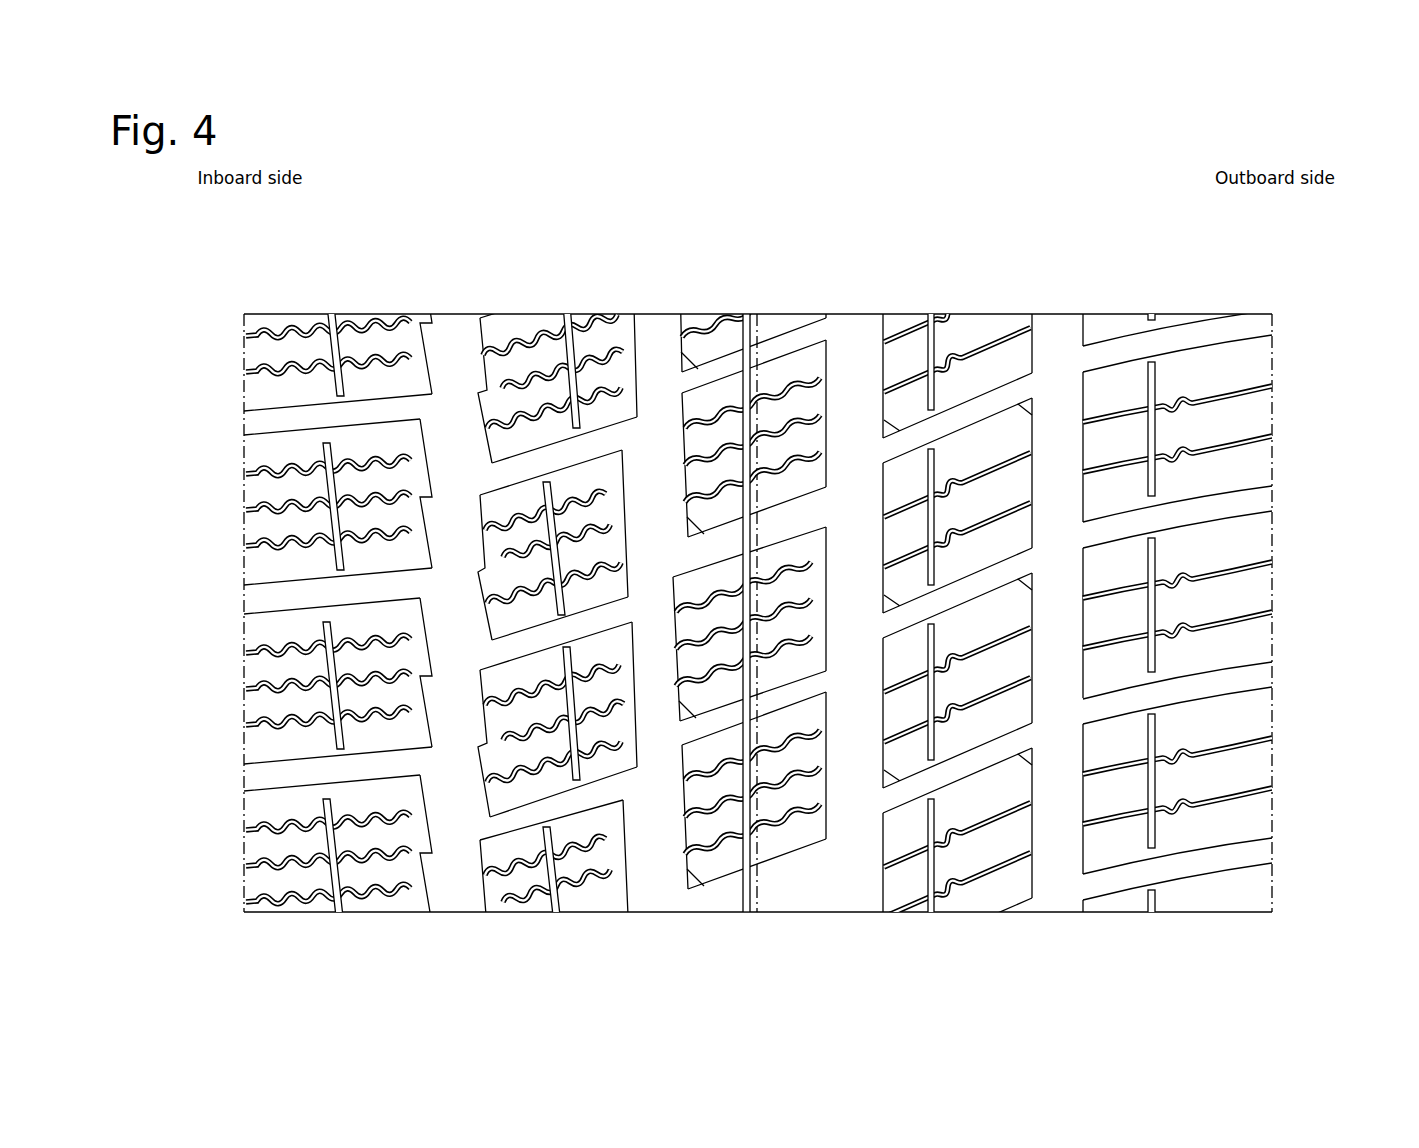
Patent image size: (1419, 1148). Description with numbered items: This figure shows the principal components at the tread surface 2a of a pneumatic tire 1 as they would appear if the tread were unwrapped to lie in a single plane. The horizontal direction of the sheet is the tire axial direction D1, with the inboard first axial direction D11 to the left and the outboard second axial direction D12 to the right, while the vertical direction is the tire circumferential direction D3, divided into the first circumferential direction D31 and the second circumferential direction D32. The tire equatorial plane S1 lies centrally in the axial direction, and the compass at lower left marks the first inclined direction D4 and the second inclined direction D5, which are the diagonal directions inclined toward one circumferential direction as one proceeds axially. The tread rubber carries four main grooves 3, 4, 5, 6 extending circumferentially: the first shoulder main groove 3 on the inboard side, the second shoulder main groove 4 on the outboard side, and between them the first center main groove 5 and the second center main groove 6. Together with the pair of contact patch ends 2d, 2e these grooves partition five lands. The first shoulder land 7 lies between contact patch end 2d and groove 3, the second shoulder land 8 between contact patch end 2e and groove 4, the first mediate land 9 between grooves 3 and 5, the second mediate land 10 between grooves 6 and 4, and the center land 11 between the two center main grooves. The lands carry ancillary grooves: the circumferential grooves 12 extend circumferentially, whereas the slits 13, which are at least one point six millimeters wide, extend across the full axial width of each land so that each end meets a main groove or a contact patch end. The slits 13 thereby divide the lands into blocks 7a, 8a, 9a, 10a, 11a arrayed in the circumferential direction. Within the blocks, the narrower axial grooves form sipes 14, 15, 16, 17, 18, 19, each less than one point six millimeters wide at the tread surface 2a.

The tire 1 is at (1305, 941).
The tread surface 2a is at (1258, 885).
The contact patch end 2d is at (244, 368).
The contact patch end 2e is at (1272, 376).
The first shoulder main groove 3 is at (456, 340).
The second shoulder main groove 4 is at (1053, 340).
The first center main groove 5 is at (660, 340).
The second center main groove 6 is at (851, 340).
The first shoulder land 7 is at (245, 294).
The second shoulder land 8 is at (1083, 294).
The first mediate land 9 is at (634, 294).
The second mediate land 10 is at (1032, 294).
The center land 11 is at (826, 294).
The circumferential groove 12 is at (330, 523).
The slit 13 is at (238, 592).
The sipe 14 is at (294, 473).
The sipe 15 is at (1207, 613).
The sipe 16 is at (578, 602).
The sipe 17 is at (543, 540).
The sipe 18 is at (978, 467).
The sipe 19 is at (766, 822).
The block 7a is at (320, 905).
The block 8a is at (1192, 895).
The block 9a is at (590, 900).
The block 10a is at (967, 902).
The block 11a is at (782, 905).
The tire equatorial plane S1 is at (757, 880).
The tire axial direction D1 is at (707, 195).
The first axial direction D11 is at (305, 203).
The second axial direction D12 is at (1230, 203).
The tire circumferential direction D3 is at (1348, 554).
The first circumferential direction D31 is at (1347, 538).
The second circumferential direction D32 is at (1348, 682).
The first inclined direction D4 is at (188, 1015).
The second inclined direction D5 is at (142, 968).